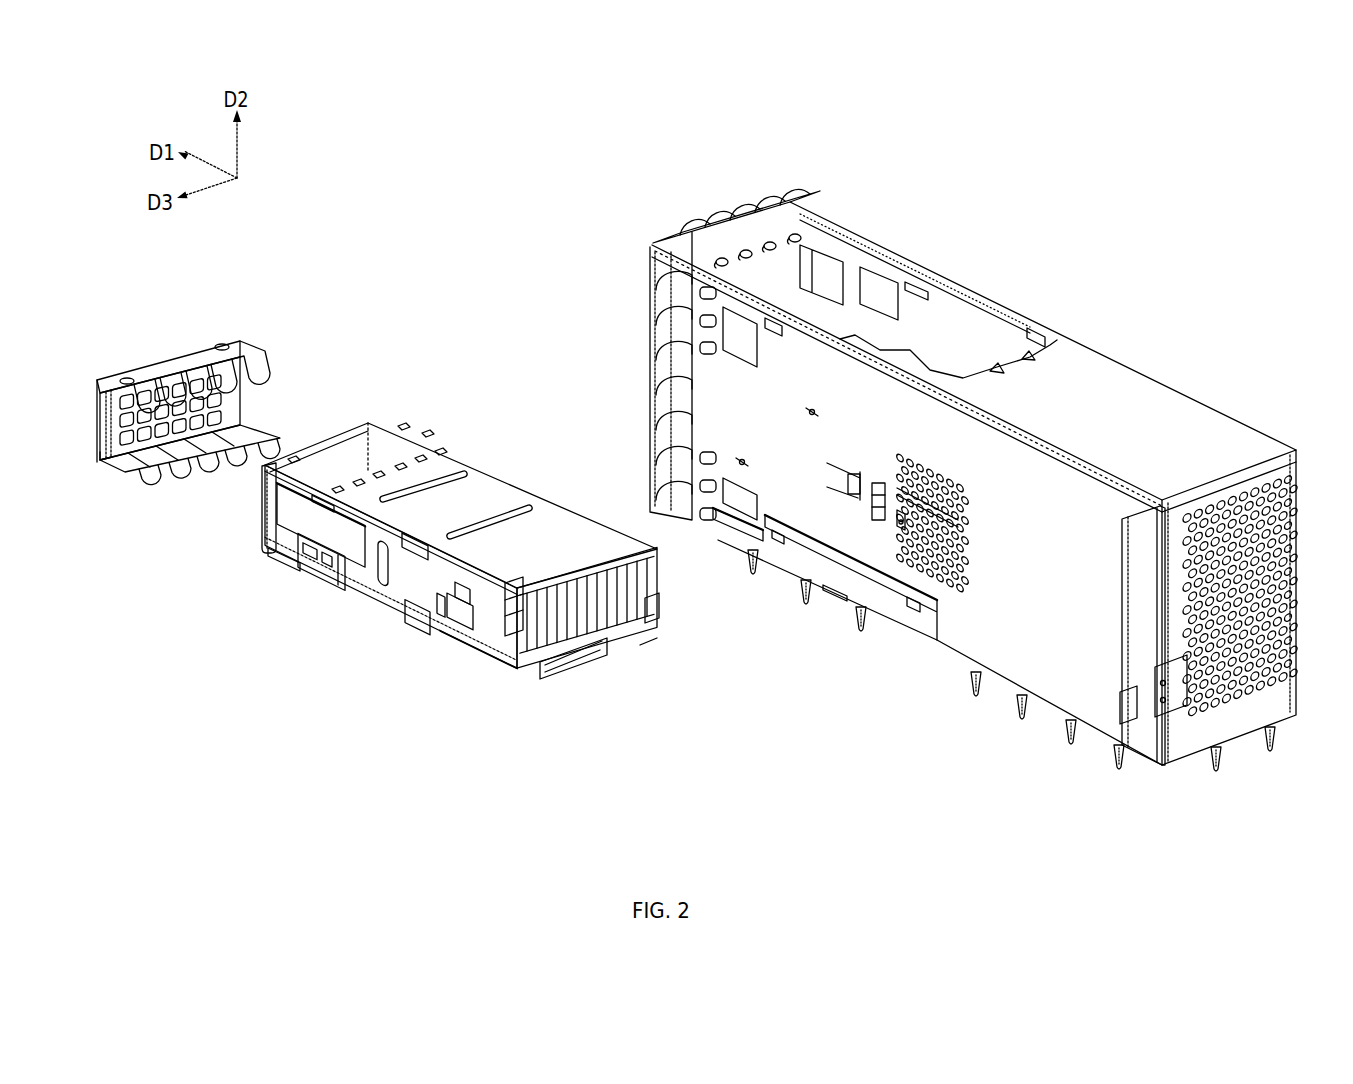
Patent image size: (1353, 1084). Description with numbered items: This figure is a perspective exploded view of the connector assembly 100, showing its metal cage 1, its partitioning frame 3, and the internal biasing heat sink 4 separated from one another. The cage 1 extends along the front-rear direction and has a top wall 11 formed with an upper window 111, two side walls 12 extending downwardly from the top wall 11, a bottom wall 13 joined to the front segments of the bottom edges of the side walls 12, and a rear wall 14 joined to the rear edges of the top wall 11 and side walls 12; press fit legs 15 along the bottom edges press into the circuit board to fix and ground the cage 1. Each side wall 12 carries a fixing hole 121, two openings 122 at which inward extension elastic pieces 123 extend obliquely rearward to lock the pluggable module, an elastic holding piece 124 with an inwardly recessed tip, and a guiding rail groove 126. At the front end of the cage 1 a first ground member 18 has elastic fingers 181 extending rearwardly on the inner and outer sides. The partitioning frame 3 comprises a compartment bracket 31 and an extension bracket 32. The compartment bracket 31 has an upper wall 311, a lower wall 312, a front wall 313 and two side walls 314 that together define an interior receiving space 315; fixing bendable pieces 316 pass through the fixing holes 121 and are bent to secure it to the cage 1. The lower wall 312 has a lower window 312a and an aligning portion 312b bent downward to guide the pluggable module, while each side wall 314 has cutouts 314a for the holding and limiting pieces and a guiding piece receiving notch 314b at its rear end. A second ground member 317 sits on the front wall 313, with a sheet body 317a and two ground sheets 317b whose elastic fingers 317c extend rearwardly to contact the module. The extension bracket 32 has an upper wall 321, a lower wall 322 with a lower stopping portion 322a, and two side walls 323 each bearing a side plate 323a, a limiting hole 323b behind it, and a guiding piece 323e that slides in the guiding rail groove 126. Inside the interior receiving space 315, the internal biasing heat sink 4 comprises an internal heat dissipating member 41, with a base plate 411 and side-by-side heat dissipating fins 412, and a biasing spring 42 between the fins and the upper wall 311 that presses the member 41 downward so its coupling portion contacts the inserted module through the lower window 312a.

The connector assembly 100 is at (362, 185).
The cage 1 is at (1085, 327).
The top wall 11 is at (1140, 393).
The upper window 111 is at (1000, 320).
The side wall 12 is at (960, 632).
The fixing hole 121 is at (817, 403).
The opening 122 is at (760, 340).
The inward extension elastic piece 123 is at (737, 345).
The elastic holding piece 124 is at (848, 470).
The guiding rail groove 126 is at (897, 487).
The bottom wall 13 is at (884, 628).
The rear wall 14 is at (1285, 702).
The press fit leg 15 is at (1119, 772).
The first ground member 18 is at (654, 237).
The elastic finger 181 is at (696, 243).
The partitioning frame 3 is at (438, 405).
The compartment bracket 31 is at (456, 455).
The upper wall 311 is at (478, 478).
The lower wall 312 is at (380, 602).
The lower window 312a is at (641, 648).
The aligning portion 312b is at (473, 652).
The front wall 313 is at (262, 503).
The side wall 314 is at (460, 613).
The cutout 314a is at (471, 589).
The guiding piece receiving notch 314b is at (536, 593).
The interior receiving space 315 is at (277, 563).
The fixing bendable piece 316 is at (414, 625).
The extension bracket 32 is at (655, 628).
The upper wall 321 is at (610, 573).
The lower wall 322 is at (625, 640).
The lower stopping portion 322a is at (570, 668).
The side wall 323 is at (660, 607).
The side plate 323a is at (443, 607).
The limiting hole 323b is at (450, 608).
The guiding piece 323e is at (521, 612).
The internal biasing heat sink 4 is at (306, 581).
The internal heat dissipating member 41 is at (298, 578).
The base plate 411 is at (326, 588).
The heat dissipating fin 412 is at (343, 584).
The biasing spring 42 is at (323, 493).
The second ground member 317 is at (175, 340).
The sheet body 317a is at (127, 378).
The ground sheet 317b is at (220, 345).
The elastic finger 317c is at (243, 357).